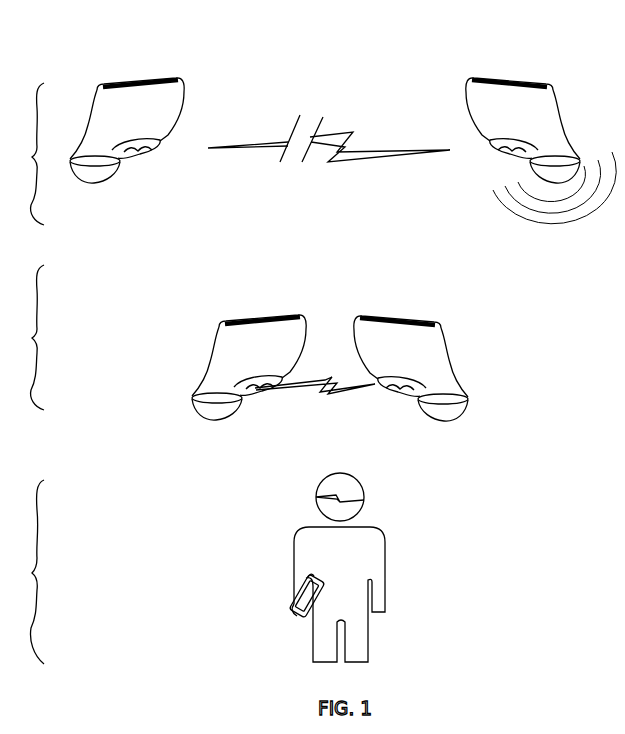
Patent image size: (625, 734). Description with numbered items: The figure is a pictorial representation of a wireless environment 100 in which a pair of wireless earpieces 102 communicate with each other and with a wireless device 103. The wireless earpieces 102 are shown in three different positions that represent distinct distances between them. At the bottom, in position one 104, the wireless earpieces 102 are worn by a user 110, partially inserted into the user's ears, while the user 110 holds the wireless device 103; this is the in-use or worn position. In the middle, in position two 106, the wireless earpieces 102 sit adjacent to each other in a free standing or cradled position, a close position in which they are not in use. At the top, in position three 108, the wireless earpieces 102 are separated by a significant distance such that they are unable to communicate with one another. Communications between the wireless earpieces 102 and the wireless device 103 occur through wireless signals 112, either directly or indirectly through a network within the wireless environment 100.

The wireless environment 100 is at (92, 42).
The wireless earpieces 102 is at (190, 110).
The wireless device 103 is at (295, 602).
The position one 104 is at (23, 572).
The position two 106 is at (23, 337).
The position three 108 is at (23, 154).
The user 110 is at (351, 567).
The wireless signals 112 is at (352, 136).